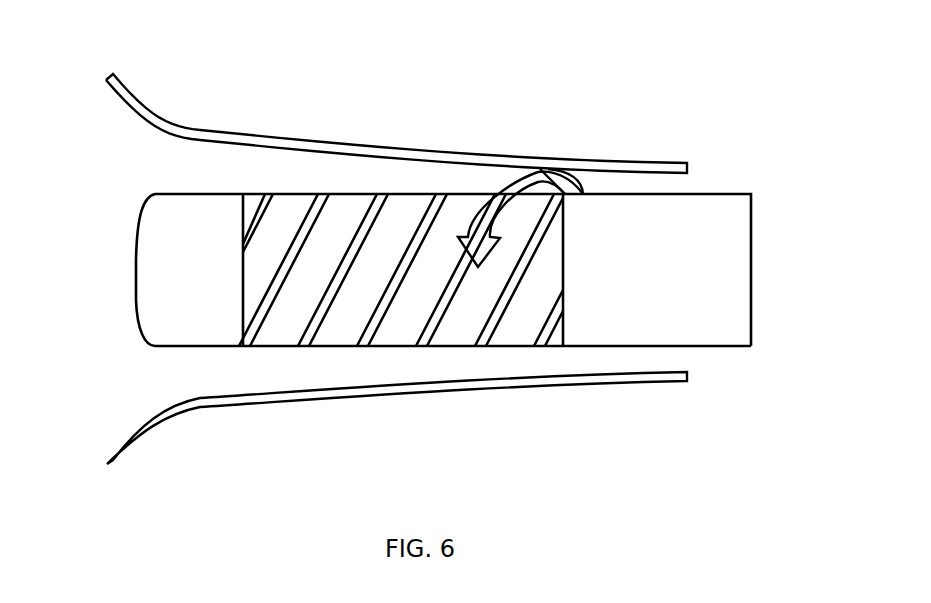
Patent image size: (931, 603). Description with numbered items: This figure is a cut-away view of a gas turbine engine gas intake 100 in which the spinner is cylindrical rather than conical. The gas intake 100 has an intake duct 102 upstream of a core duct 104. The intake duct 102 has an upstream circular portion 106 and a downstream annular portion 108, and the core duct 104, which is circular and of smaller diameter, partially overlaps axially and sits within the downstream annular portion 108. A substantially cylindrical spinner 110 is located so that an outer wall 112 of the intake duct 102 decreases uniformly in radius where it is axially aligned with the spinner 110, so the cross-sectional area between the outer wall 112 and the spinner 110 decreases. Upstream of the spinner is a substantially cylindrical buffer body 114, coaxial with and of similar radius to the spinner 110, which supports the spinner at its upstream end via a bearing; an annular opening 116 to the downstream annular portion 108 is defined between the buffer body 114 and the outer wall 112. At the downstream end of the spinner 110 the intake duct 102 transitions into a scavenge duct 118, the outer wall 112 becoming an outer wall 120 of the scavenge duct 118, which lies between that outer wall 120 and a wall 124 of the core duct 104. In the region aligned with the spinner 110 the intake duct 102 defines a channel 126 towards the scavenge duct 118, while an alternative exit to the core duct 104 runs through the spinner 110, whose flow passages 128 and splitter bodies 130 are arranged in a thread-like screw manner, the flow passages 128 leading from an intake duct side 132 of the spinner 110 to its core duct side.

The gas intake 100 is at (301, 100).
The intake duct 102 is at (197, 160).
The core duct 104 is at (707, 232).
The upstream circular portion 106 is at (125, 240).
The downstream annular portion 108 is at (445, 178).
The spinner 110 is at (397, 332).
The outer wall of the intake duct 112 is at (482, 386).
The buffer body 114 is at (223, 312).
The annular opening 116 is at (147, 167).
The scavenge duct 118 is at (626, 170).
The outer wall of the scavenge duct 120 is at (583, 160).
The wall of the core duct 124 is at (716, 352).
The channel 126 is at (472, 178).
The flow passages 128 is at (320, 312).
The splitter bodies 130 is at (287, 313).
The intake duct side 132 is at (407, 215).